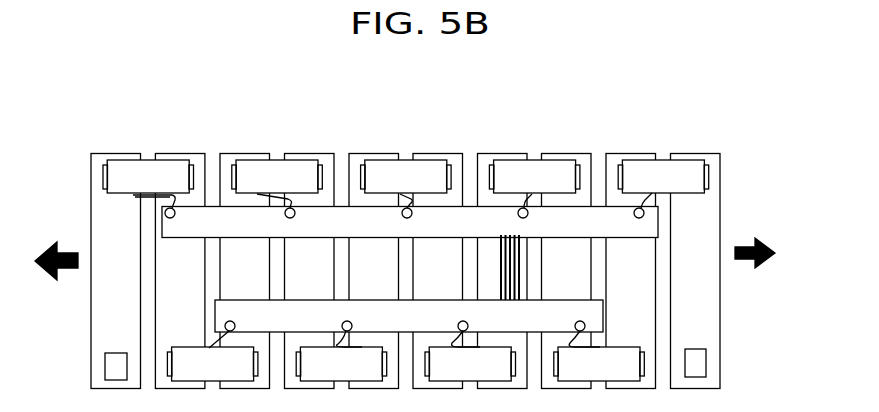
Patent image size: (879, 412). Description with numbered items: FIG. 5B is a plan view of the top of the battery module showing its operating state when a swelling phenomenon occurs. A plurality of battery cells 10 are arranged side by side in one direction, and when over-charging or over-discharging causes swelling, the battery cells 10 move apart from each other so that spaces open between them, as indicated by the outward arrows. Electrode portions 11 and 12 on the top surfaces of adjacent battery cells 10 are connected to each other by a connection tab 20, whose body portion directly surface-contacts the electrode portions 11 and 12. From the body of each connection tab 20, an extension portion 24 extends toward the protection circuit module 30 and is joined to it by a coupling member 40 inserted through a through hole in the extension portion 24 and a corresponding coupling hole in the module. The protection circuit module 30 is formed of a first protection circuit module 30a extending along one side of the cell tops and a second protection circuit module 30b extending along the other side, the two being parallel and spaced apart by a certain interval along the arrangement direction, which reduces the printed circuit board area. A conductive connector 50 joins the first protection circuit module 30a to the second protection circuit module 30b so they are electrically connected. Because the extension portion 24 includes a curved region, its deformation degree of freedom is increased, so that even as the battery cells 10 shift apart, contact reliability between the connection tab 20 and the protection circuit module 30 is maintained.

The battery cell 10 is at (719, 360).
The electrode portion 11 is at (104, 171).
The electrode portion 12 is at (195, 171).
The connection tab 20 is at (148, 167).
The extension portion 24 is at (131, 196).
The protection circuit module 30 is at (484, 264).
The first protection circuit module 30a is at (654, 221).
The second protection circuit module 30b is at (604, 306).
The coupling member 40 is at (161, 210).
The connector 50 is at (520, 268).